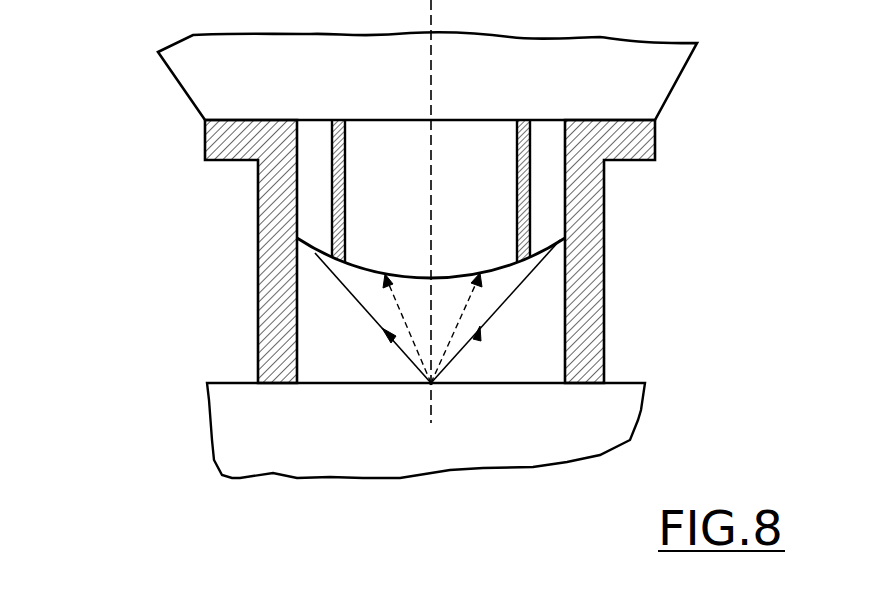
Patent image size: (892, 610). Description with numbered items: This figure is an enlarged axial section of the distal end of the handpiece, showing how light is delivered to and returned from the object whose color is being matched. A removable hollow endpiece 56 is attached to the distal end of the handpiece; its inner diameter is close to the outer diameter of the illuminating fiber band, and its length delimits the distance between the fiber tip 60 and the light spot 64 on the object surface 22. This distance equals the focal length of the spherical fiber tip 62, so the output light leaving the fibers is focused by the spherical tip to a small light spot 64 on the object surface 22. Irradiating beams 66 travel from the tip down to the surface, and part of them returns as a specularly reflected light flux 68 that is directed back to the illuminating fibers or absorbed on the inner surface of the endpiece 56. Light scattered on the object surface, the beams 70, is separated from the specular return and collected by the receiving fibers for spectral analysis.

The object surface 22 is at (227, 447).
The removable hollow endpiece 56 is at (266, 281).
The fiber tip 60 is at (434, 276).
The spherical fiber tip 62 is at (308, 247).
The light spot 64 is at (433, 385).
The irradiating beams 66 is at (510, 298).
The specularly reflected light flux 68 is at (408, 362).
The beams scattered on the object surface 70 is at (403, 327).